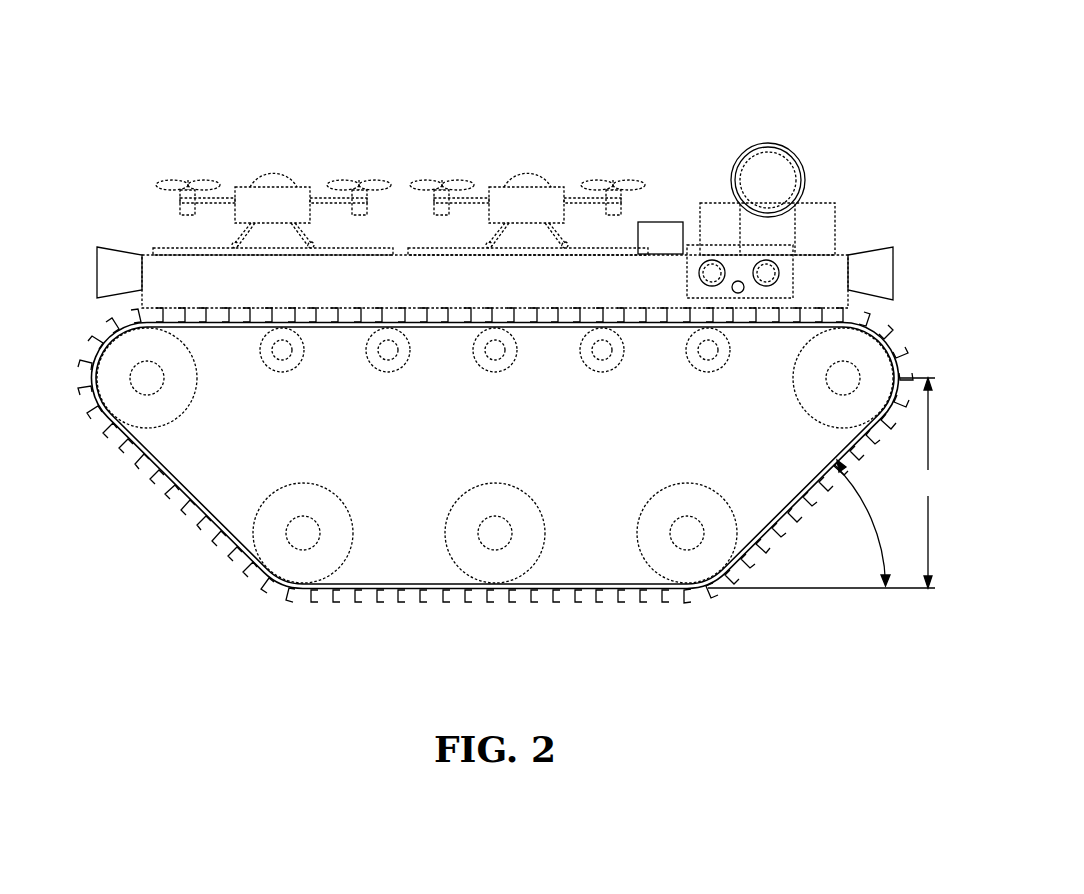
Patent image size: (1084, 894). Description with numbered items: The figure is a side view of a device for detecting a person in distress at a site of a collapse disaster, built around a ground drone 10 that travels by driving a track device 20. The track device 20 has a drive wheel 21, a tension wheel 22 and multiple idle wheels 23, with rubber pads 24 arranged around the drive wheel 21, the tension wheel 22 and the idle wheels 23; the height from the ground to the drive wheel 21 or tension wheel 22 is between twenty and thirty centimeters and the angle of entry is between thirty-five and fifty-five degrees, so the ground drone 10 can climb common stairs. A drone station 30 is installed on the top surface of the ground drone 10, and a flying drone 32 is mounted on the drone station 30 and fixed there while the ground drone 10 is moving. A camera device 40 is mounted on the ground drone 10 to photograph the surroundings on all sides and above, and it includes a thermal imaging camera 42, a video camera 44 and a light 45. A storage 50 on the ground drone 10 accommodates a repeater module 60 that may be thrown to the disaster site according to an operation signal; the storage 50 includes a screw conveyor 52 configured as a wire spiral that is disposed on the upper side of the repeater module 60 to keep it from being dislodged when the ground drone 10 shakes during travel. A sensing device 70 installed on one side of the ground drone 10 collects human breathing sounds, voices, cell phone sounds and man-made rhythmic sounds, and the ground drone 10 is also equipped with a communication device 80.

The ground drone 10 is at (317, 88).
The track device 20 is at (408, 578).
The drive wheel 21 is at (197, 388).
The tension wheel 22 is at (803, 392).
The idle wheels 23 is at (311, 505).
The rubber pads 24 is at (170, 493).
The drone station 30 is at (168, 250).
The flying drone 32 is at (250, 196).
The camera device 40 is at (110, 265).
The thermal imaging camera 42 is at (712, 273).
The video camera 44 is at (766, 273).
The light 45 is at (738, 293).
The storage 50 is at (778, 193).
The screw conveyor 52 is at (768, 143).
The repeater module 60 is at (718, 203).
The sensing device 70 is at (658, 222).
The communication device 80 is at (660, 238).